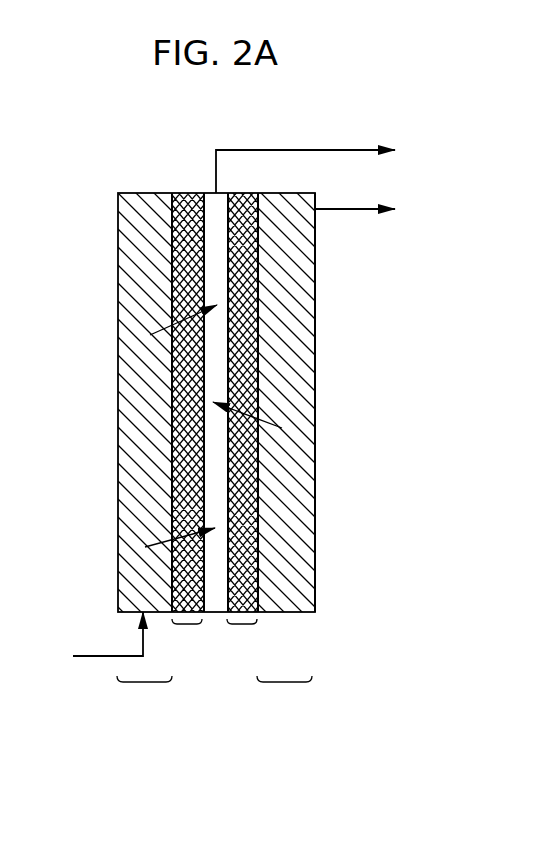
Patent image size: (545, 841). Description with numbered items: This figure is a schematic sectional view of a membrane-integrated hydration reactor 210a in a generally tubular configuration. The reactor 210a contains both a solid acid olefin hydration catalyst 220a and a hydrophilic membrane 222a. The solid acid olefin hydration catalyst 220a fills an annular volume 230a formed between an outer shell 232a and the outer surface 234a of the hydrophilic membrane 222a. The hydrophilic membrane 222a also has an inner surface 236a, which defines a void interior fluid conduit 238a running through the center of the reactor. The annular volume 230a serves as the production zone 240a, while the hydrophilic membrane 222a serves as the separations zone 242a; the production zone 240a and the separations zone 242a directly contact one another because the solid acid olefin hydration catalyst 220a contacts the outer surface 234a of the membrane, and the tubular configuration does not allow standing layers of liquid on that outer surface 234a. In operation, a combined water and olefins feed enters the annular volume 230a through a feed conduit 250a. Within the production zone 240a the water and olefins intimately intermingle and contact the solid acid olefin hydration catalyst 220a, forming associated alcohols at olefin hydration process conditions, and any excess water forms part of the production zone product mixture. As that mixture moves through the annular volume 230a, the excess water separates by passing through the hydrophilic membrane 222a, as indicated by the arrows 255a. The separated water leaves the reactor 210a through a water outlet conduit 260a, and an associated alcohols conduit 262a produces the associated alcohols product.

The membrane-integrated hydration reactor 210a is at (130, 177).
The solid acid olefin hydration catalyst 220a is at (298, 282).
The hydrophilic membrane 222a is at (247, 332).
The annular volume 230a is at (297, 463).
The outer shell 232a is at (315, 493).
The outer surface of hydrophilic membrane 234a is at (258, 545).
The inner surface of hydrophilic membrane 236a is at (238, 582).
The interior fluid conduit 238a is at (208, 573).
The production zone 240a is at (143, 682).
The separations zone 242a is at (187, 624).
The feed conduit 250a is at (108, 657).
The arrows 255a is at (155, 328).
The water outlet conduit 260a is at (327, 150).
The associated alcohols conduit 262a is at (353, 210).